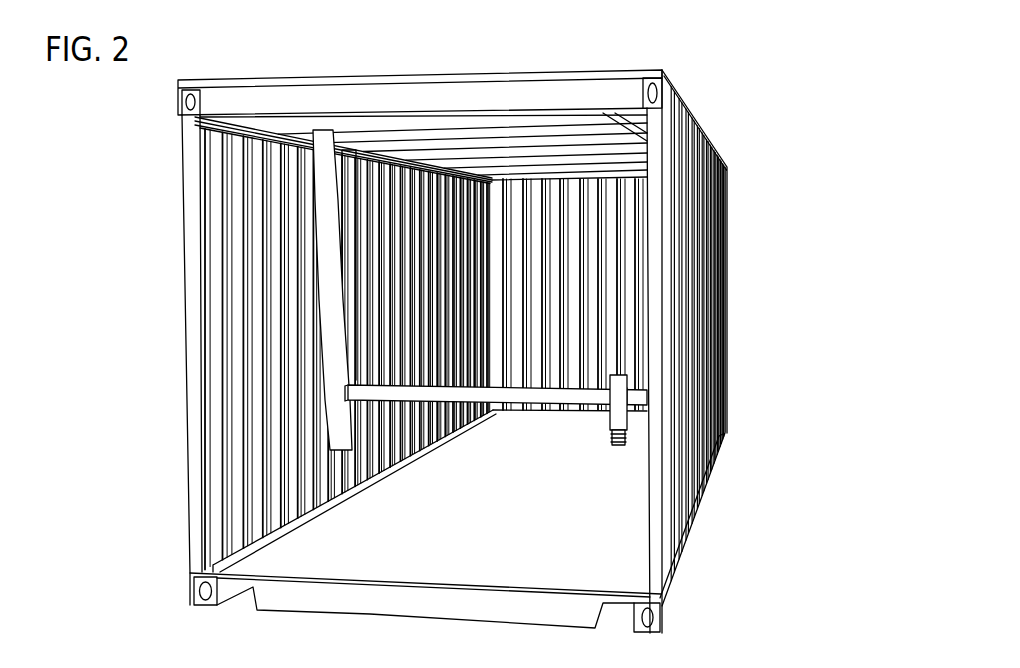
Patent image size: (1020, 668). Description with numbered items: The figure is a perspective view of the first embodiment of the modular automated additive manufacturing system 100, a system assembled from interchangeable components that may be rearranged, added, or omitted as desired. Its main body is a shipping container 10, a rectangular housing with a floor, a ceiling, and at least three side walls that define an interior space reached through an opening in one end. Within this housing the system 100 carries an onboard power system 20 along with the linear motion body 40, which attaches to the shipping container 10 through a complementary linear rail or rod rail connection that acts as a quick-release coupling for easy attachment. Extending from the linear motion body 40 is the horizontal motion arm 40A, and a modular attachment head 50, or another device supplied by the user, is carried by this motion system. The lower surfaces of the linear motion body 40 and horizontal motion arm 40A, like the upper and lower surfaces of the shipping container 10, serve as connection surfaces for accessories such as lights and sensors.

The modular automated additive manufacturing system 100 is at (749, 79).
The shipping container 10 is at (498, 98).
The onboard power system 20 is at (357, 80).
The linear motion body 40 is at (323, 243).
The horizontal motion arm 40A is at (523, 395).
The modular attachment head 50 is at (615, 415).